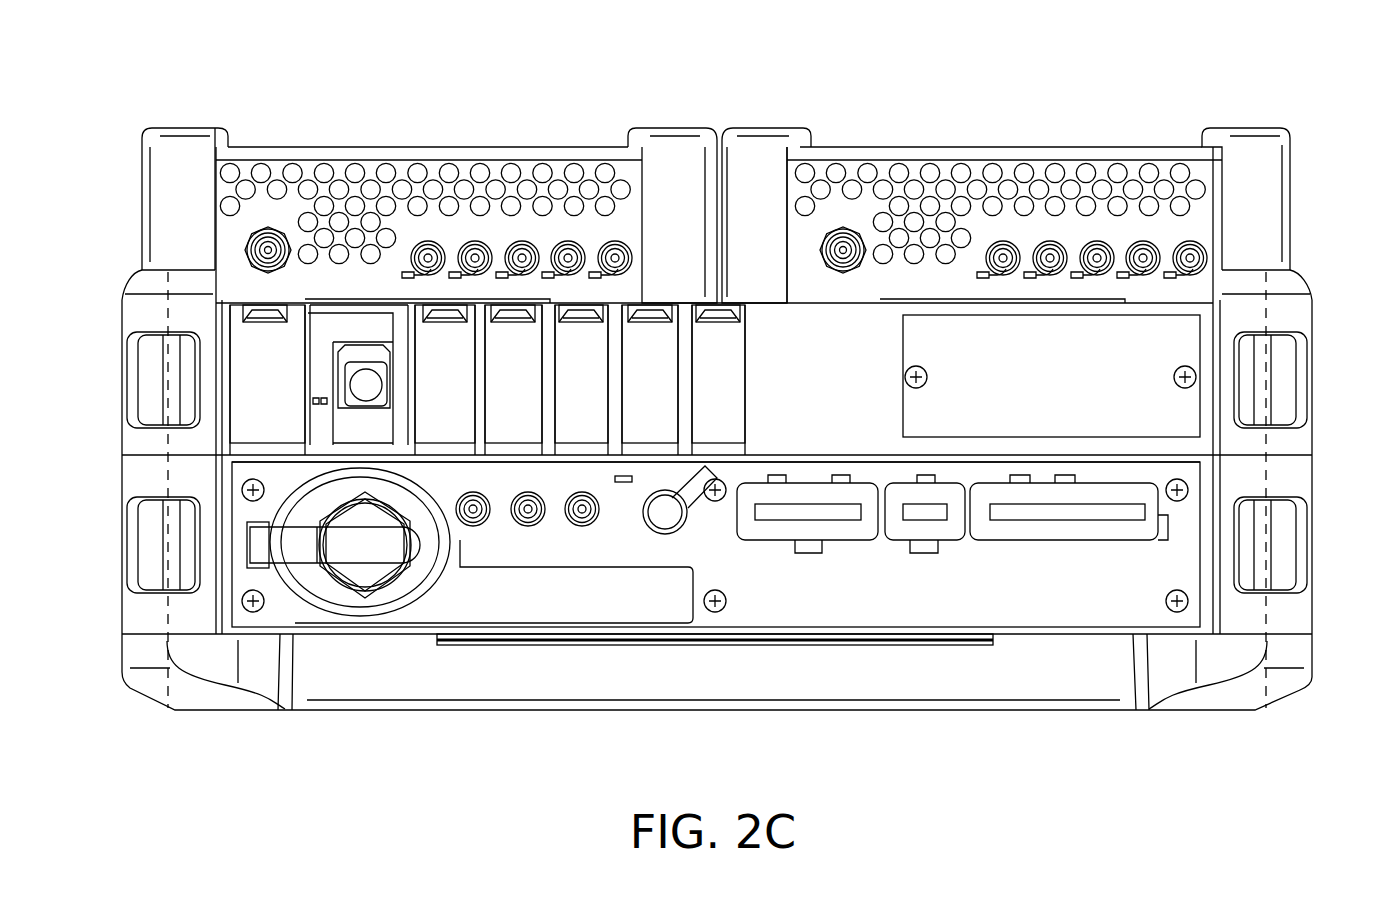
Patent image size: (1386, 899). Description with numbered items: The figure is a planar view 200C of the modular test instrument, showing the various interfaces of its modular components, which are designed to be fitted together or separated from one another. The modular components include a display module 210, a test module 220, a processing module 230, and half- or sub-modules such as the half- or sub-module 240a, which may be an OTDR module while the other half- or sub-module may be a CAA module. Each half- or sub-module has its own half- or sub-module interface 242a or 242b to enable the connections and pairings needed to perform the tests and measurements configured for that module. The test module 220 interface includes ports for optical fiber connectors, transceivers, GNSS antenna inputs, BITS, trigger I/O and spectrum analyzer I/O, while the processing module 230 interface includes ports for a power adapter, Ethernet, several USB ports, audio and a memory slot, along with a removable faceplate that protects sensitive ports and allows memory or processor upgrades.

The planar view 200C is at (688, 54).
The display module 210 is at (838, 413).
The test module 220 is at (121, 556).
The processing module 230 is at (121, 388).
The half- or sub-module 240a is at (1292, 170).
The half- or sub-module interface 242a is at (985, 233).
The half- or sub-module interface 242b is at (143, 176).